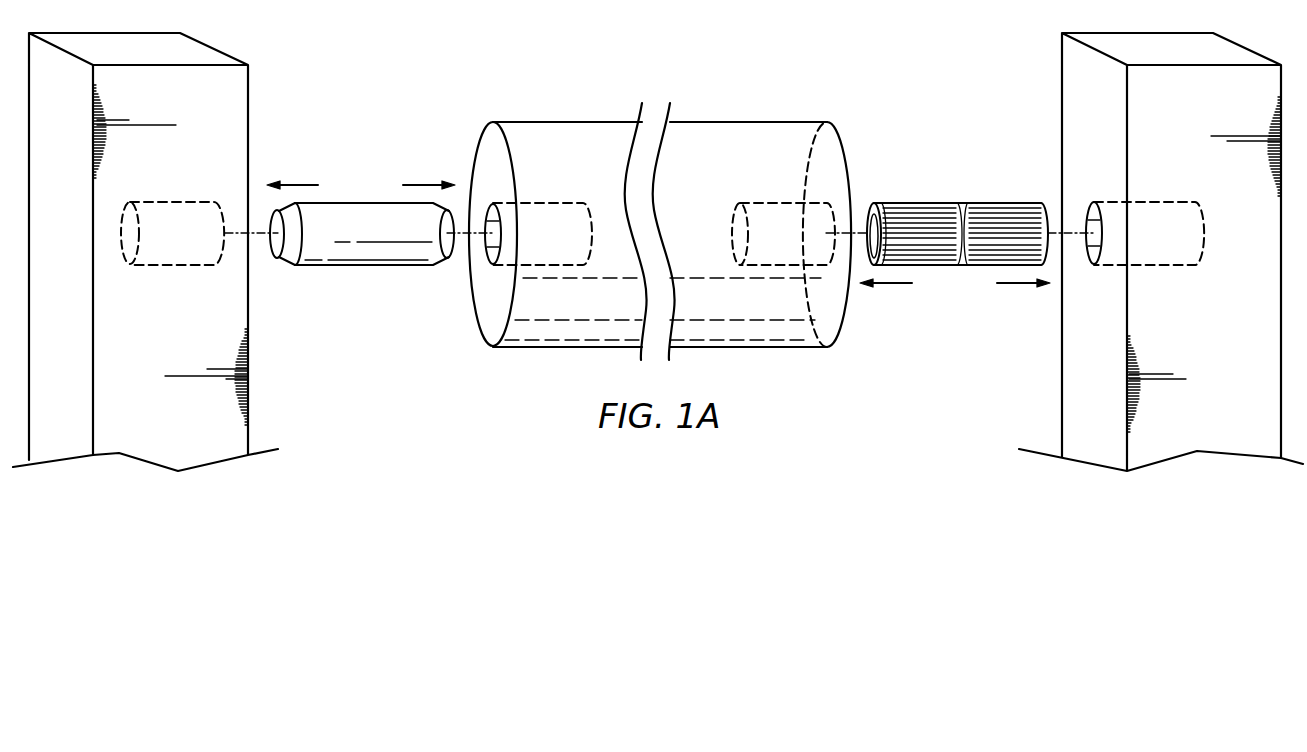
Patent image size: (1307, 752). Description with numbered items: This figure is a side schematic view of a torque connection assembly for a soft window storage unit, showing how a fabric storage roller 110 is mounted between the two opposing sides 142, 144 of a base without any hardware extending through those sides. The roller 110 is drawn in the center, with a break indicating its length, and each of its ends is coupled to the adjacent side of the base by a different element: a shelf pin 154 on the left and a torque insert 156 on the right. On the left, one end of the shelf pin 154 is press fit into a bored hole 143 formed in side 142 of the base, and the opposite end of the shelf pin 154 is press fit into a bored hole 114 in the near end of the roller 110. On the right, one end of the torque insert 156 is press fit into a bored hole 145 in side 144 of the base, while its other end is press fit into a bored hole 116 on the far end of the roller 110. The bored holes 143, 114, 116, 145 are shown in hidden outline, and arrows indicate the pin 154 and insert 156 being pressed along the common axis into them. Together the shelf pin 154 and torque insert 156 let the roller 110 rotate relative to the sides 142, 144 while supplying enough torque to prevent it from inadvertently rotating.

The fabric storage roller 110 is at (588, 122).
The bored hole 114 is at (557, 202).
The bored hole 116 is at (770, 202).
The side 142 is at (195, 329).
The bored hole 143 is at (175, 202).
The side 144 is at (1234, 329).
The bored hole 145 is at (1166, 202).
The shelf pin 154 is at (377, 267).
The torque insert 156 is at (958, 267).